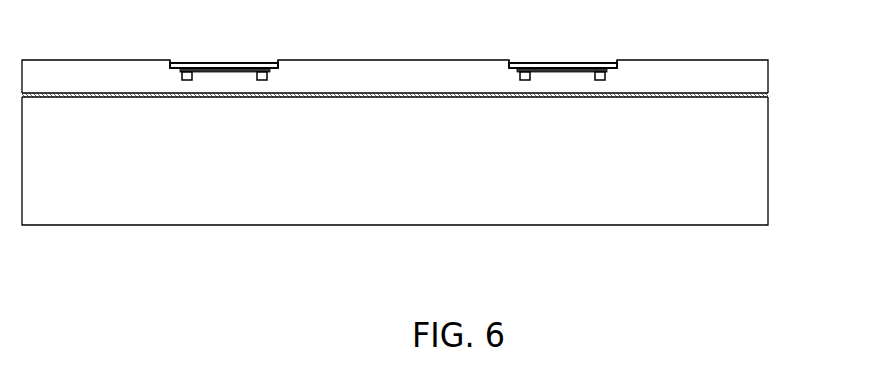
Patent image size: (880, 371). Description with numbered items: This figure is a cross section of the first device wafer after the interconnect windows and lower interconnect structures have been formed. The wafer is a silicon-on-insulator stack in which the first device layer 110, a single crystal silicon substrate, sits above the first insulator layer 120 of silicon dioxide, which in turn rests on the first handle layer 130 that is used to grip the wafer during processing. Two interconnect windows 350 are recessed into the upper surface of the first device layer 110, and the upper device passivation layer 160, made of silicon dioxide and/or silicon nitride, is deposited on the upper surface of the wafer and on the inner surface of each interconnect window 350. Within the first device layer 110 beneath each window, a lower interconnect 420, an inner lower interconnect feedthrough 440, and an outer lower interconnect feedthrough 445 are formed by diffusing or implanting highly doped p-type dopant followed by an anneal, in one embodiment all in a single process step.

The first device layer 110 is at (768, 63).
The first insulator layer 120 is at (768, 95).
The first handle layer 130 is at (768, 154).
The upper device passivation layer 160 is at (170, 67).
The interconnect window 350 is at (238, 55).
The lower interconnect 420 is at (212, 72).
The inner lower interconnect feedthrough 440 is at (278, 67).
The outer lower interconnect feedthrough 445 is at (176, 80).